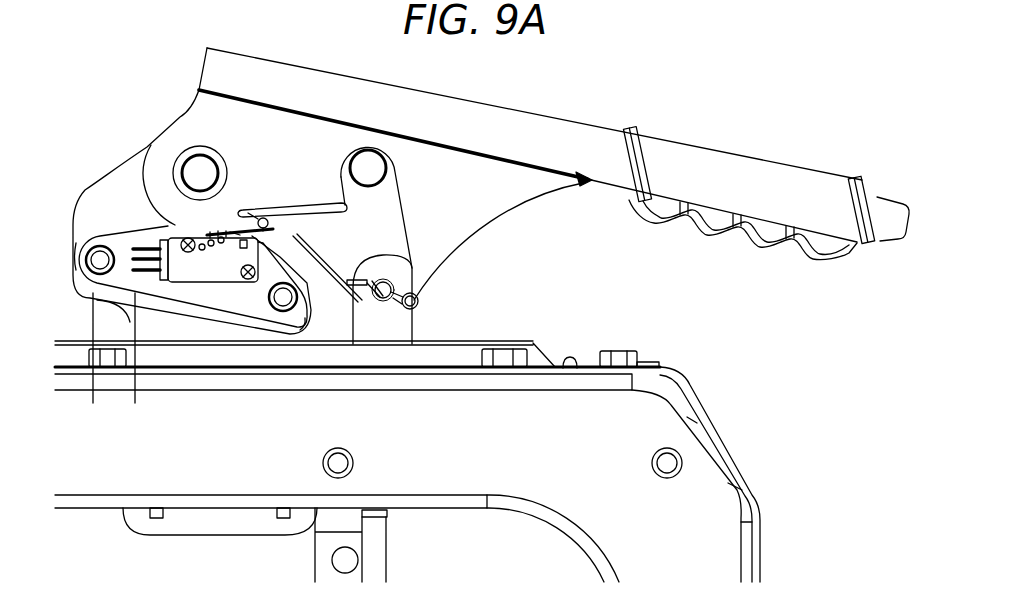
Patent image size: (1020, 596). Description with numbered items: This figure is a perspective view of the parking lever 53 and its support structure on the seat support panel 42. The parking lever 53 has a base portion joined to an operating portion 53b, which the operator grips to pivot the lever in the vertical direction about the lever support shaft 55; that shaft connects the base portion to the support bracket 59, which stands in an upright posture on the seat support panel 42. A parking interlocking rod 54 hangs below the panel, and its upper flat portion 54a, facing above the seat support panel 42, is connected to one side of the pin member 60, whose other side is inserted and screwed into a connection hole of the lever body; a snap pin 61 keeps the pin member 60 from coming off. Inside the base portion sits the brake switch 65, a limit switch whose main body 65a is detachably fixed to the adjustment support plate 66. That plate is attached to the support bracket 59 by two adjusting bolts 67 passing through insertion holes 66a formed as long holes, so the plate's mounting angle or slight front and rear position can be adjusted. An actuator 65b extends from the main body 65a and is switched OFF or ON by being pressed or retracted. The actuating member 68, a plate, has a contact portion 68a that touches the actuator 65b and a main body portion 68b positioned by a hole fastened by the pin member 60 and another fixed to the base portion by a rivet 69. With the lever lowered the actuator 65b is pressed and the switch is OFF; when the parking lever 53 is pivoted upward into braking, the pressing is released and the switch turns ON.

The seat support panel 42 is at (573, 378).
The parking lever 53 is at (621, 91).
The operating portion 53b is at (757, 163).
The parking interlocking rod 54 is at (396, 564).
The upper flat portion 54a is at (398, 331).
The lever support shaft 55 is at (193, 167).
The support bracket 59 is at (100, 405).
The pin member 60 is at (392, 284).
The snap pin 61 is at (419, 299).
The brake switch 65 is at (210, 292).
The main body 65a is at (212, 268).
The actuator 65b is at (248, 279).
The adjustment support plate 66 is at (131, 236).
The insertion hole 66a is at (79, 248).
The adjusting bolt 67 is at (95, 268).
The actuating member 68 is at (323, 150).
The contact portion 68a is at (300, 206).
The main body portion 68b is at (341, 200).
The rivet 69 is at (413, 187).